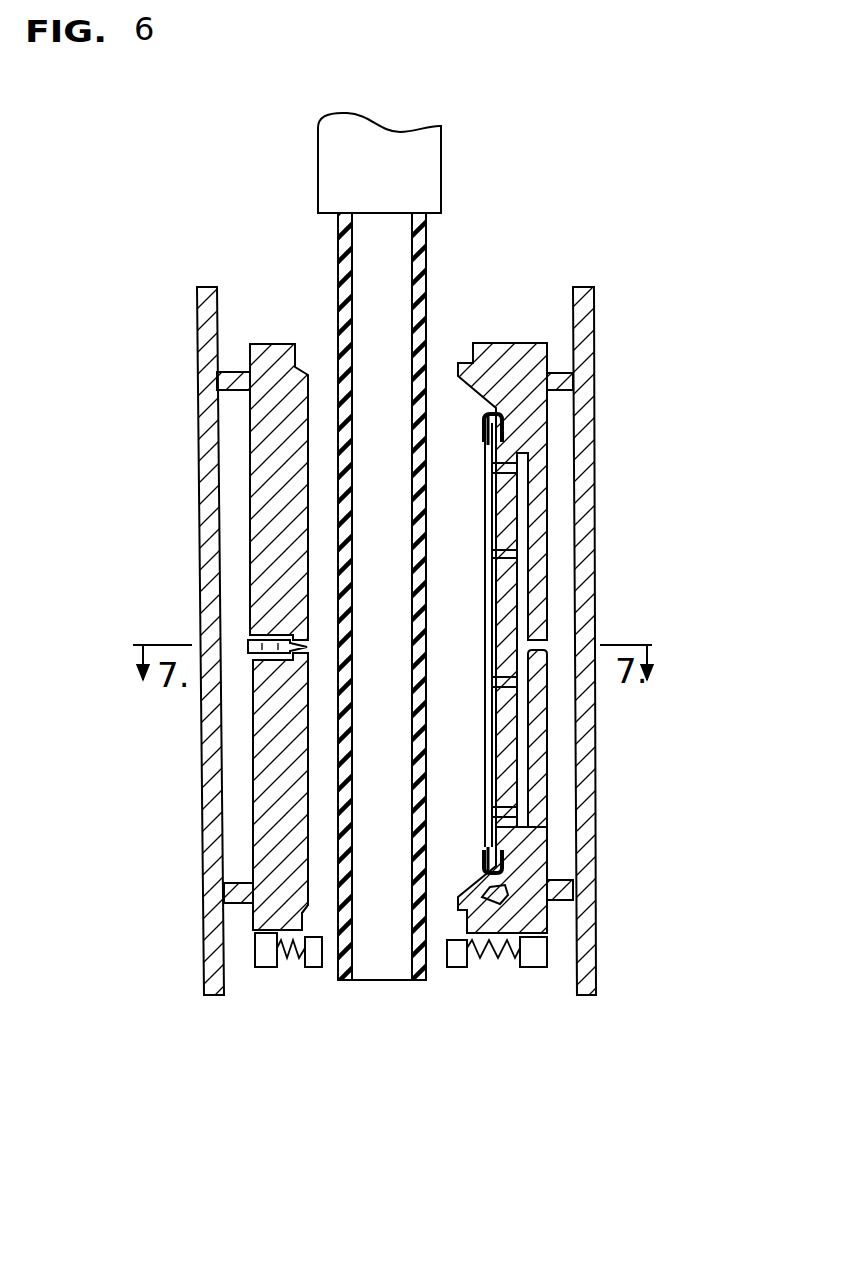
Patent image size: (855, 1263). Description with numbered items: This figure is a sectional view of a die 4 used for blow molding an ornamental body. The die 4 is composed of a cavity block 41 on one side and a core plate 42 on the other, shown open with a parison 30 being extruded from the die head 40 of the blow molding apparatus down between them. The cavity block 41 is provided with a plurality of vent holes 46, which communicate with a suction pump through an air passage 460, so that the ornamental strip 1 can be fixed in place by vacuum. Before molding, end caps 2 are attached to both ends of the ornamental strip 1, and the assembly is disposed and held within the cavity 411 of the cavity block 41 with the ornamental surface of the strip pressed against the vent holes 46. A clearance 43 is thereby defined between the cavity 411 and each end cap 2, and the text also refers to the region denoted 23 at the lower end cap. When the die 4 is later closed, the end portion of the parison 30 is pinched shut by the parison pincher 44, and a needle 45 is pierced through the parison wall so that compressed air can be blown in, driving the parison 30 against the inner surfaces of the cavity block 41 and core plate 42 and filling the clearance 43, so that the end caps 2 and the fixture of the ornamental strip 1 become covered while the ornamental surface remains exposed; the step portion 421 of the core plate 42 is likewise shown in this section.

The ornamental strip 1 is at (503, 620).
The end cap 2 is at (483, 425).
The die 4 is at (291, 302).
The hook portion 23 is at (487, 903).
The parison 30 is at (338, 258).
The die head 40 is at (425, 172).
The cavity block 41 is at (527, 420).
The core plate 42 is at (273, 463).
The clearance 43 is at (484, 412).
The parison pincher 44 is at (305, 957).
The needle 45 is at (263, 633).
The vent holes 46 is at (500, 487).
The cavity 411 is at (507, 960).
The step portion 421 is at (308, 772).
The air passage 460 is at (523, 765).